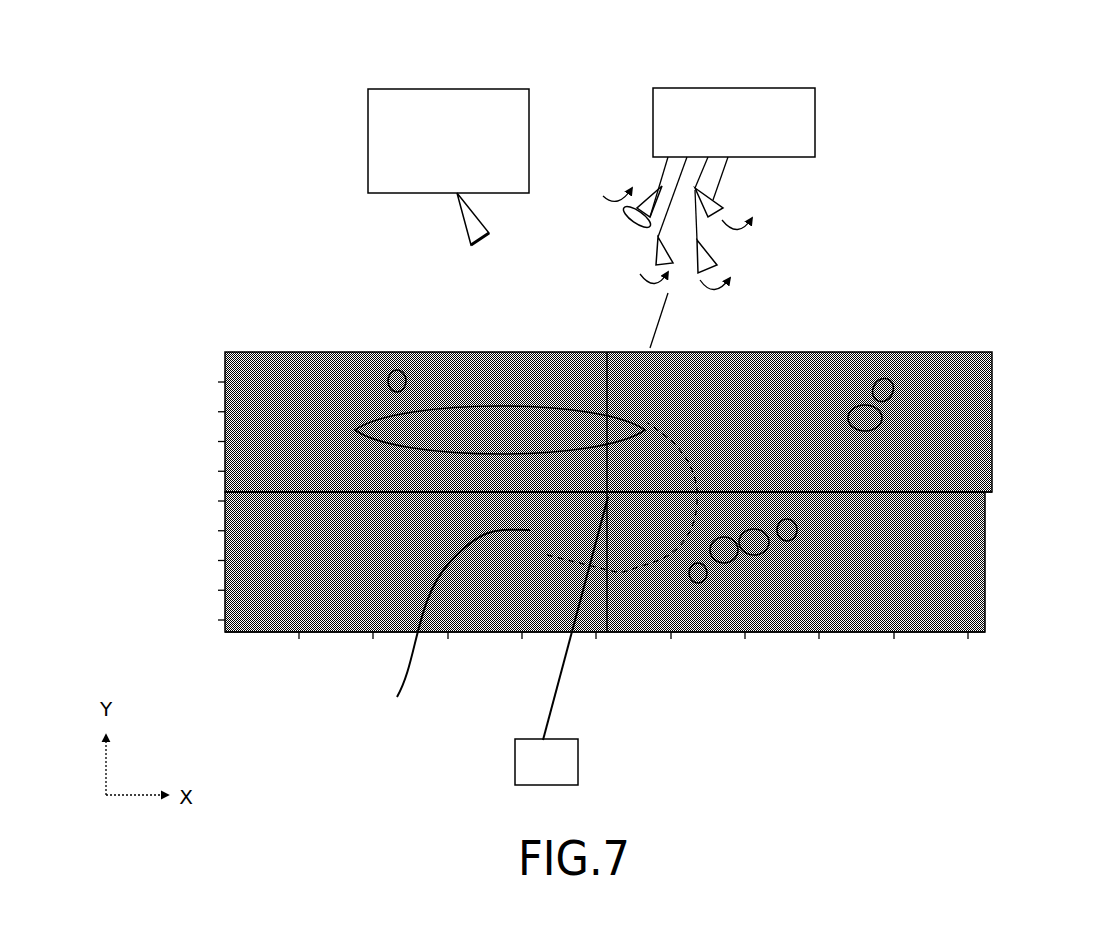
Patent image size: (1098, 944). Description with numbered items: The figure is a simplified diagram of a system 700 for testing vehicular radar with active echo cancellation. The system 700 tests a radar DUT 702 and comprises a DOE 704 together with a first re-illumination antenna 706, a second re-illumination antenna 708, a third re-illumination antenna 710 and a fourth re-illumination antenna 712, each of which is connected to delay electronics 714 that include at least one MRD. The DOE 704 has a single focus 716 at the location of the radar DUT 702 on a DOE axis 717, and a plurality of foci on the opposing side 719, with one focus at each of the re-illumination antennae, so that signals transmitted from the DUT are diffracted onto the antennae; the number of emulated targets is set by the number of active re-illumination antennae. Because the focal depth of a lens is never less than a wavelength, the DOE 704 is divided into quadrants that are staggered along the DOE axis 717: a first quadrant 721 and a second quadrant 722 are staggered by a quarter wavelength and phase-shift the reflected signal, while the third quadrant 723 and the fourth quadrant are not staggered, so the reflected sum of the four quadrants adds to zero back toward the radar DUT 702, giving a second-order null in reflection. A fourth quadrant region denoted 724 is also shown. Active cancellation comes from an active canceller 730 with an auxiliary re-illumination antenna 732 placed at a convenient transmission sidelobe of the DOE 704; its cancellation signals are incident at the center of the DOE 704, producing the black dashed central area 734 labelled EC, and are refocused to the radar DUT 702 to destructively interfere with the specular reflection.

The system 700 is at (558, 46).
The radar DUT 702 is at (578, 778).
The DOE 704 is at (608, 501).
The first re-illumination antenna 706 is at (625, 180).
The second re-illumination antenna 708 is at (653, 243).
The third re-illumination antenna 710 is at (697, 250).
The fourth re-illumination antenna 712 is at (722, 200).
The delay electronics 714 is at (815, 110).
The single focus 716 is at (540, 740).
The DOE axis 717 is at (548, 728).
The opposing side 719 is at (943, 585).
The first quadrant 721 is at (940, 360).
The second quadrant 722 is at (258, 615).
The third quadrant 723 is at (398, 360).
The screen bottom edge 724 is at (848, 633).
The active canceller 730 is at (368, 132).
The auxiliary re-illumination antenna 732 is at (489, 226).
The black dashed central area 734 is at (444, 625).